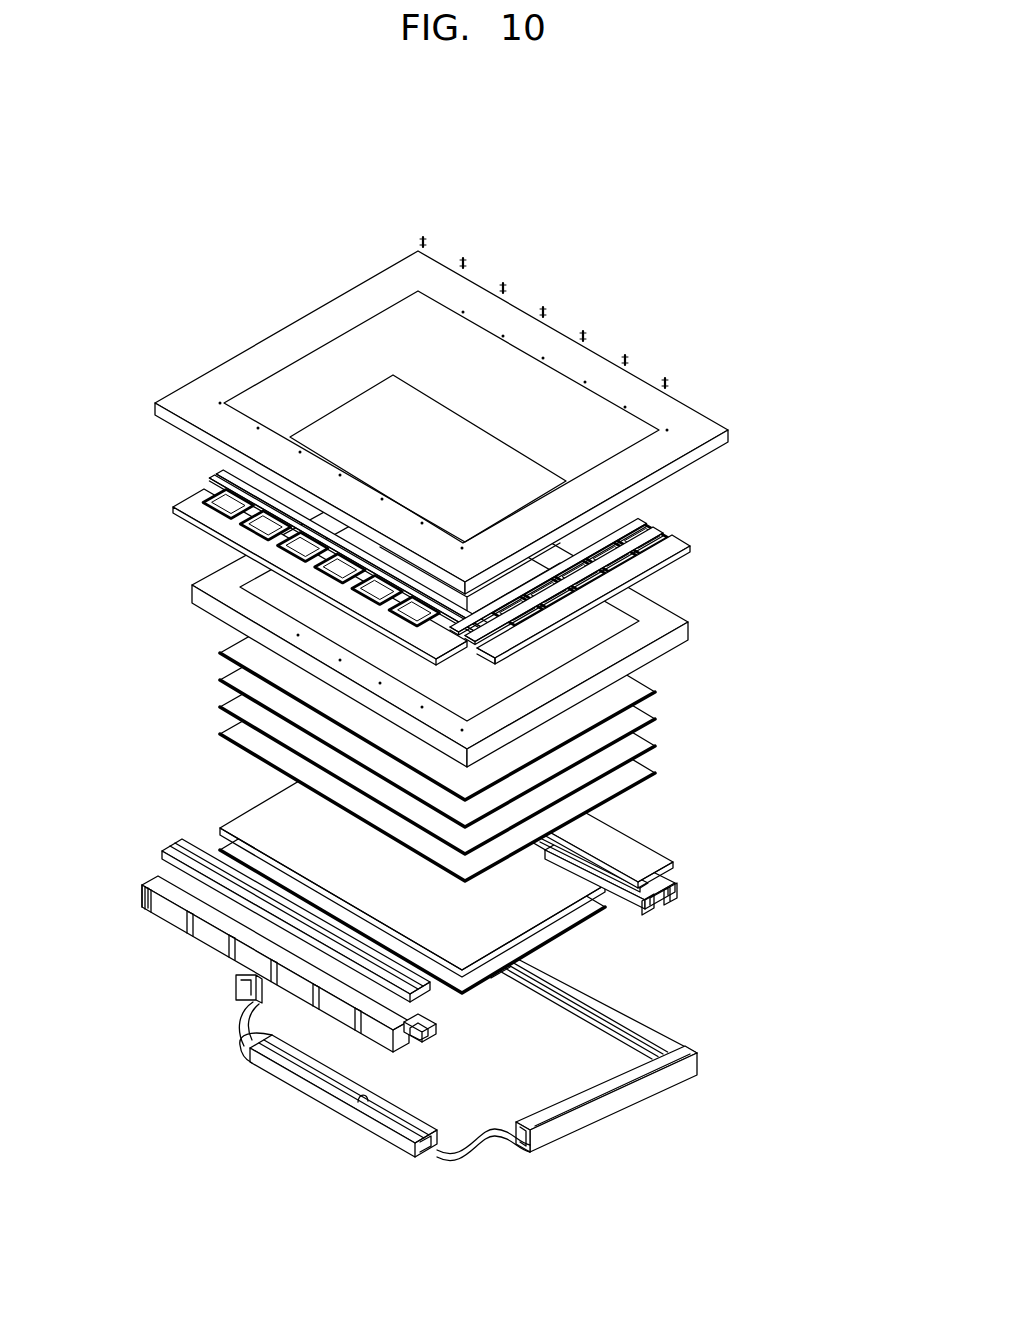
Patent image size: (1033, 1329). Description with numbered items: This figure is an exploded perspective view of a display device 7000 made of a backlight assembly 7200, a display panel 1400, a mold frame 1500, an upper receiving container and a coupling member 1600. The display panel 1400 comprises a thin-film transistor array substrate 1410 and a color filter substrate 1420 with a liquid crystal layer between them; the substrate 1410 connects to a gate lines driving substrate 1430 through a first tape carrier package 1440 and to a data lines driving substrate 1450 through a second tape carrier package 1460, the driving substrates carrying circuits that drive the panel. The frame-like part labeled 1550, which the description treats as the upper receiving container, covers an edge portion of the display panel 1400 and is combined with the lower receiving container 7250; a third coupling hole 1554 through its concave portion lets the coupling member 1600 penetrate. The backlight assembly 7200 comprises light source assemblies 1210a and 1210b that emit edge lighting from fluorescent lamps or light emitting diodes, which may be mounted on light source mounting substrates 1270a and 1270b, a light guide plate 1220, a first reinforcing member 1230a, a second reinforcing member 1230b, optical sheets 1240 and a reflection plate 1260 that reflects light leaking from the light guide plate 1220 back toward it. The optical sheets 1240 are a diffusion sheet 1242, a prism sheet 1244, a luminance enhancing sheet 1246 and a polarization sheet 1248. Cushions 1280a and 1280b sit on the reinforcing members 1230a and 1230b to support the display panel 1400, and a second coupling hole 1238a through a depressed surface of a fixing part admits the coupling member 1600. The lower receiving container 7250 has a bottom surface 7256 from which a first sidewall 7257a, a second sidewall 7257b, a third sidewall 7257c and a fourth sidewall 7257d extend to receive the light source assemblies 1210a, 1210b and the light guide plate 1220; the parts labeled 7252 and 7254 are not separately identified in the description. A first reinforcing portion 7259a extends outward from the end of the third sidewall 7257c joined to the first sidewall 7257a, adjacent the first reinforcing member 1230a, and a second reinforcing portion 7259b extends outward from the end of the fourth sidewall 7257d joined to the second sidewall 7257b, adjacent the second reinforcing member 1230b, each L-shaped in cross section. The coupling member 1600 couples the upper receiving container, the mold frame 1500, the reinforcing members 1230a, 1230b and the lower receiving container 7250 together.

The display device 7000 is at (452, 137).
The backlight assembly 7200 is at (797, 512).
The coupling member 1600 is at (428, 241).
The top chassis frame portion 1550 is at (300, 443).
The third coupling hole 1554 is at (221, 405).
The mold frame 1500 is at (191, 587).
The display panel 1400 is at (740, 498).
The thin-film transistor array substrate 1410 is at (656, 530).
The color filters substrate 1420 is at (640, 517).
The gate lines driving substrate 1430 is at (176, 507).
The first tape carrier package 1440 is at (214, 487).
The data lines driving substrate 1450 is at (680, 548).
The second tape carrier package 1460 is at (645, 542).
The optical sheets 1240 is at (740, 686).
The diffusion sheet 1242 is at (656, 772).
The prism sheet 1244 is at (656, 745).
The luminance enhancing sheet 1246 is at (656, 718).
The polarization sheet 1248 is at (656, 692).
The reflection plate 1260 is at (565, 928).
The light guide plate 1220 is at (622, 860).
The first reinforcing member 1230a is at (155, 878).
The second reinforcing member 1230b is at (676, 878).
The second coupling hole 1238a is at (143, 890).
The cushion 1280a is at (200, 856).
The cushion 1280b is at (645, 862).
The light source assembly 1210a is at (433, 1037).
The light source assembly 1210b is at (676, 894).
The light source mounting substrate 1270a is at (440, 1020).
The light source mounting substrate 1270b is at (655, 907).
The lower receiving container 7250 is at (676, 1105).
The first side wall 7252 is at (246, 1050).
The side wall flange 7254 is at (325, 1092).
The bottom surface 7256 is at (620, 1010).
The first sidewall 7257a is at (360, 1104).
The second sidewall 7257b is at (600, 1010).
The third sidewall 7257c is at (567, 1097).
The fourth sidewall 7257d is at (240, 983).
The first reinforcing portion 7259a is at (245, 1006).
The second reinforcing portion 7259b is at (487, 1142).